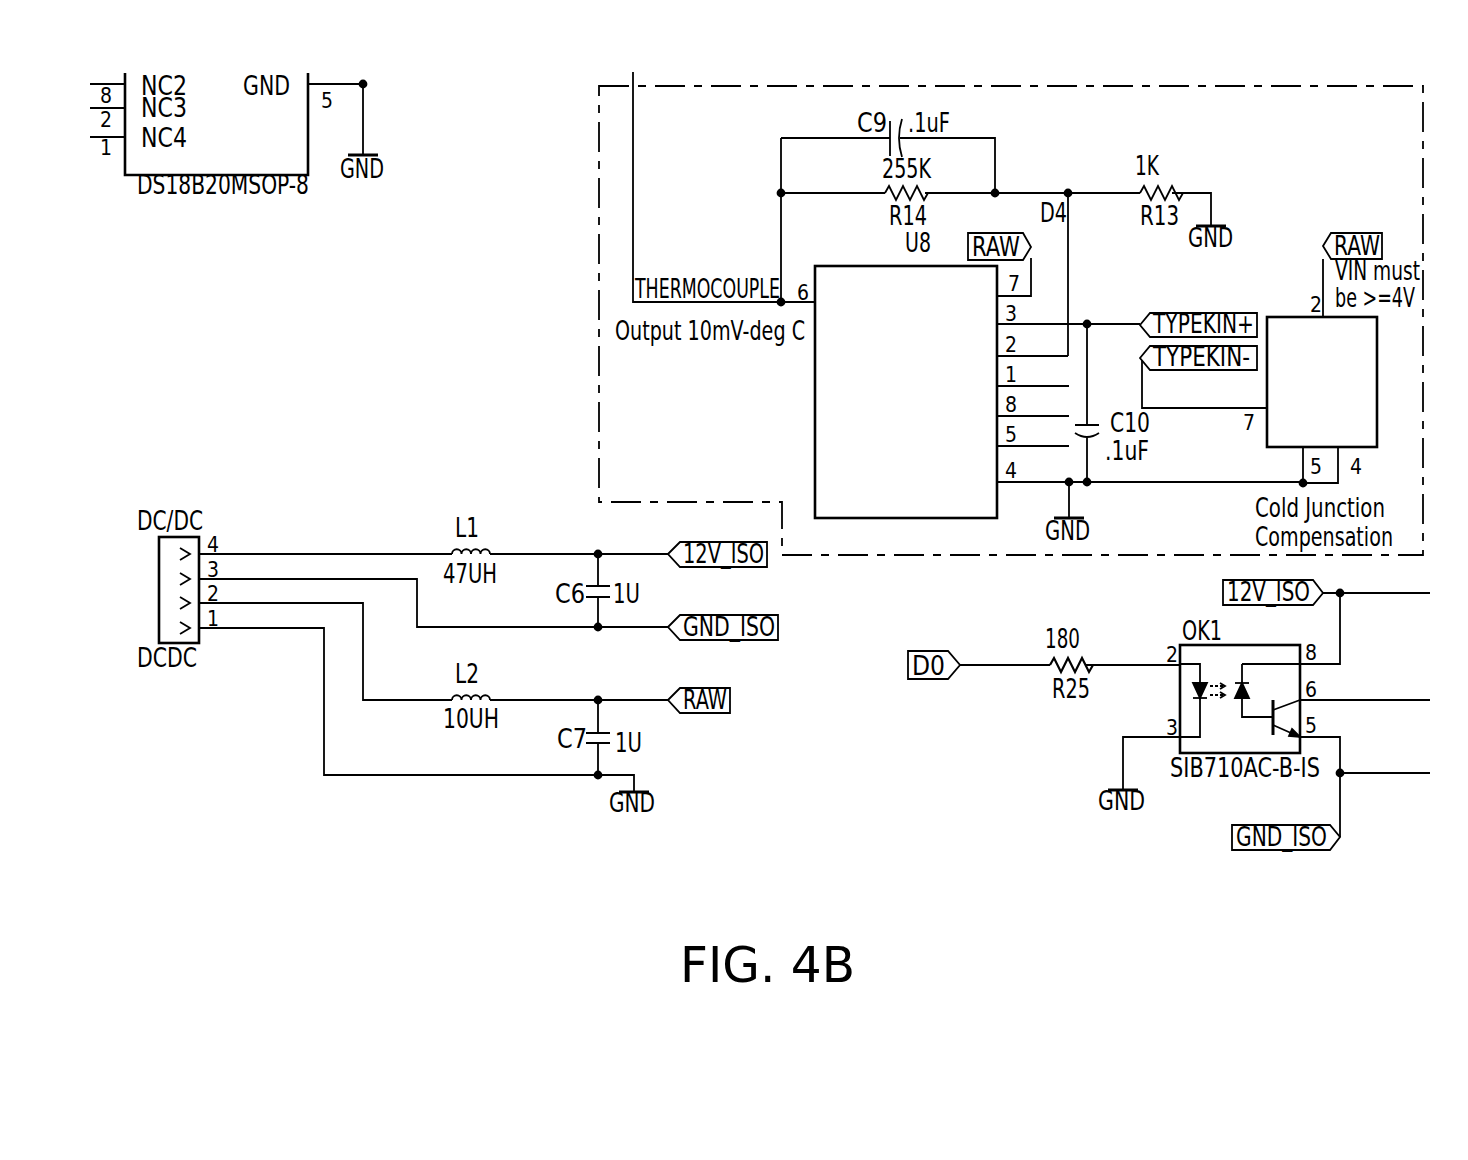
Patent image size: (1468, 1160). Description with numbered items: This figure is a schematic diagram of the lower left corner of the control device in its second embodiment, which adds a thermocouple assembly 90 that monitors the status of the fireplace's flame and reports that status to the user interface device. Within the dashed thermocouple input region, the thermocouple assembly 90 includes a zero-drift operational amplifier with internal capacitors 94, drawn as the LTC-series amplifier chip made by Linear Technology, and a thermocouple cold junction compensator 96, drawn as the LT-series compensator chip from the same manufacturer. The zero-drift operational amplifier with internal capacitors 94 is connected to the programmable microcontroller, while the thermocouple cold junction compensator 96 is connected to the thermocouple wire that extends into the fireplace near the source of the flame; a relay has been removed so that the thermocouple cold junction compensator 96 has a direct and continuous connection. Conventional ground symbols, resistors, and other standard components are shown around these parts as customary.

The thermocouple assembly 90 is at (1011, 451).
The zero-drift operational amplifier with internal capacitors 94 is at (848, 490).
The thermocouple cold junction compensator 96 is at (1352, 410).